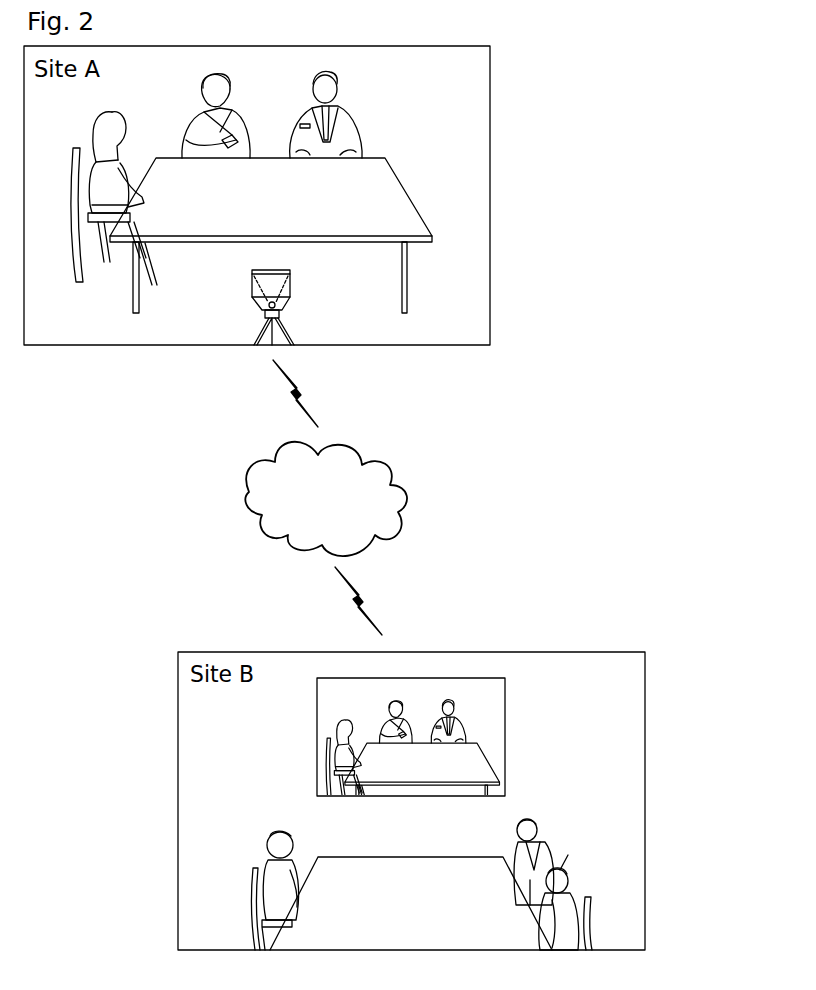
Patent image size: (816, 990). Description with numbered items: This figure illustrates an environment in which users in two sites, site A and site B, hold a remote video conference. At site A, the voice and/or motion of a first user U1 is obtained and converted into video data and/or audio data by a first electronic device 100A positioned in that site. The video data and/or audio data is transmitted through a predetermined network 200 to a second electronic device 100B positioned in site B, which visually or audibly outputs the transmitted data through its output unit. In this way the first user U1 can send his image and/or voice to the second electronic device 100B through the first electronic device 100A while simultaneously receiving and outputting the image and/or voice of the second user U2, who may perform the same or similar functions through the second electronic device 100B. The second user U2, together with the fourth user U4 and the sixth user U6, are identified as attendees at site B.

The first user U1 is at (350, 123).
The first electronic device 100A is at (290, 298).
The network 200 is at (405, 502).
The second electronic device 100B is at (505, 738).
The fourth user U4 is at (275, 845).
The second user U2 is at (552, 847).
The sixth user U6 is at (575, 896).